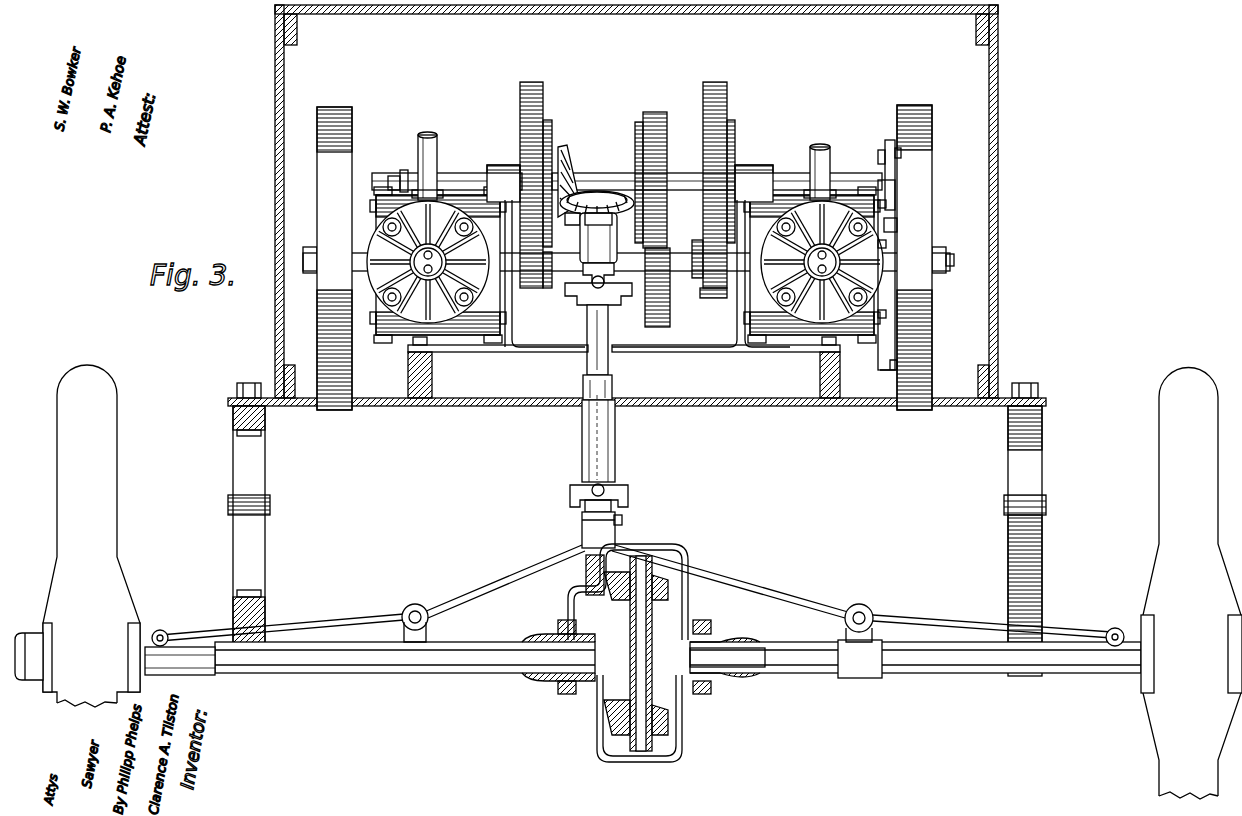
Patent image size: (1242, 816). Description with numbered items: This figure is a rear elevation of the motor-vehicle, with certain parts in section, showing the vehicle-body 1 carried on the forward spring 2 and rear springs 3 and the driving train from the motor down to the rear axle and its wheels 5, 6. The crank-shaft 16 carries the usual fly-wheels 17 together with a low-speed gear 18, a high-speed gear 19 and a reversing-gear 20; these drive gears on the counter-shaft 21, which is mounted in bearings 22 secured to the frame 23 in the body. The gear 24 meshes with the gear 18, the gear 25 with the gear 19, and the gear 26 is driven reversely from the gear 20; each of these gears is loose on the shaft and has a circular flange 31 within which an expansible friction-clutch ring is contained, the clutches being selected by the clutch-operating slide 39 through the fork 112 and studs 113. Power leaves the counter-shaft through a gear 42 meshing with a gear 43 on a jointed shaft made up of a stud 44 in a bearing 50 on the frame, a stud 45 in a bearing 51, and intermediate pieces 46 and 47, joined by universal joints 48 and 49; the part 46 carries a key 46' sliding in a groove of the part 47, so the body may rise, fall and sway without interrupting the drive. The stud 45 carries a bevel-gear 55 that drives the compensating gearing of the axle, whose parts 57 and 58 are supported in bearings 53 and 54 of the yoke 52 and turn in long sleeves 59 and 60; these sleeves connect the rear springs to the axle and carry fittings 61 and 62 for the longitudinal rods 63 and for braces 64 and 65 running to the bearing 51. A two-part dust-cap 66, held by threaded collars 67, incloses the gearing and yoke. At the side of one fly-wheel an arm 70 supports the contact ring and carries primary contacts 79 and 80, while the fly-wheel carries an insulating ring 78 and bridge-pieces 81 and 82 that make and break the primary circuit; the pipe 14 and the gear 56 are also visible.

The vehicle-body 1 is at (275, 168).
The forward spring 2 is at (628, 582).
The rear springs 3 is at (1050, 480).
The wheel 5 is at (436, 265).
The wheel 6 is at (813, 265).
The pipe 14 is at (418, 157).
The crank-shaft 16 is at (308, 254).
The fly-wheels 17 is at (940, 207).
The low-speed gear 18 is at (713, 298).
The high-speed gear 19 is at (670, 320).
The reversing-gear 20 is at (545, 288).
The counter-shaft 21 is at (620, 176).
The bearings 22 is at (768, 170).
The frame 23 is at (433, 362).
The gear 24 is at (724, 84).
The gear 25 is at (660, 112).
The gear 26 is at (536, 90).
The circular rim or flange 31 is at (549, 125).
The clutch-operating slide 39 is at (473, 185).
The gear 42 is at (569, 152).
The gear 43 is at (571, 224).
The stud 44 is at (618, 218).
The stud 45 is at (622, 520).
The intermediate piece 46 is at (608, 340).
The key 46' is at (615, 381).
The intermediate piece 47 is at (612, 443).
The universal joint 48 is at (580, 302).
The universal joint 49 is at (612, 492).
The bearing 50 is at (598, 238).
The bearing 51 is at (598, 530).
The yoke 52 is at (580, 580).
The bearing 53 is at (720, 636).
The bearing 54 is at (540, 636).
The bevel-gear 55 is at (560, 593).
The gear 56 is at (654, 596).
The axle part 57 is at (742, 672).
The axle part 58 is at (510, 655).
The sleeve 59 is at (915, 657).
The sleeve 60 is at (372, 672).
The fitting 61 is at (866, 607).
The fitting 62 is at (408, 607).
The longitudinal rods 63 is at (428, 620).
The brace 64 is at (773, 570).
The brace 65 is at (492, 574).
The two-part dust-cap 66 is at (568, 612).
The threaded collars 67 is at (708, 616).
The arm 70 is at (880, 184).
The ring of insulating material 78 is at (897, 232).
The circuit terminal or contact 79 is at (878, 155).
The circuit terminal or contact 80 is at (904, 152).
The bridge-piece 81 is at (890, 142).
The bridge-piece 82 is at (888, 372).
The fork 112 is at (390, 180).
The studs 113 is at (405, 172).